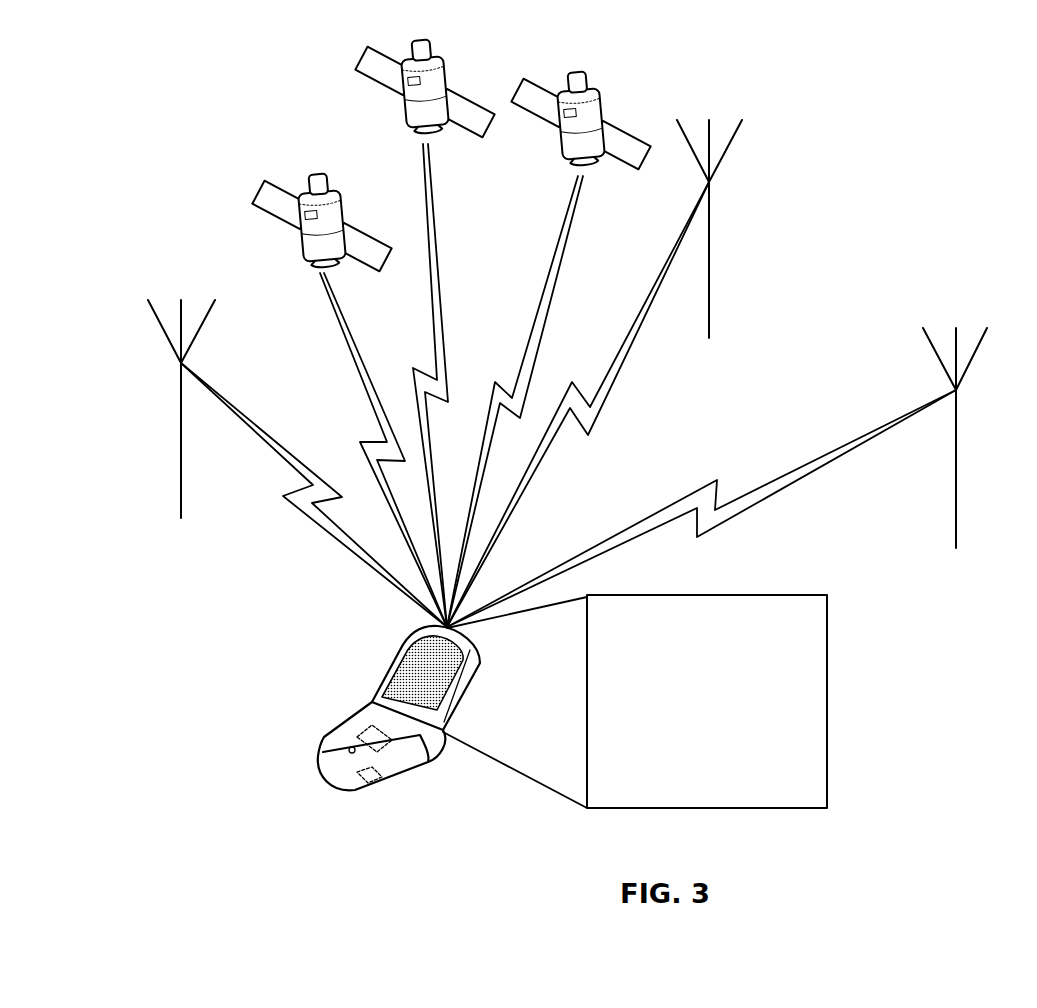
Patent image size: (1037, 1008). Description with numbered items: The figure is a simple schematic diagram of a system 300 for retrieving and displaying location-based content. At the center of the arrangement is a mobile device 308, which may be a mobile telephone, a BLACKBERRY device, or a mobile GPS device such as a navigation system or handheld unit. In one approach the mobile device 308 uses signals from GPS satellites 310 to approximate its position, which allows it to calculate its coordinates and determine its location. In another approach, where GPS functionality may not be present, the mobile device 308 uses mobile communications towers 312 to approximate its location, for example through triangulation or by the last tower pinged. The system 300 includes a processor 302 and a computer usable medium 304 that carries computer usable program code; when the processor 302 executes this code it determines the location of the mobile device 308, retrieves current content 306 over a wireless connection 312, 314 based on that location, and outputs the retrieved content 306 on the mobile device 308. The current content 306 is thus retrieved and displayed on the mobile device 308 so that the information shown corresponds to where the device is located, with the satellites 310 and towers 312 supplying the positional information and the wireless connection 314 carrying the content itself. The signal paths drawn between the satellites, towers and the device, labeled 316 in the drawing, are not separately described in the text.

The system 300 is at (836, 197).
The processor 302 is at (357, 731).
The computer usable medium 304 is at (388, 782).
The content 306 is at (807, 593).
The mobile device 308 is at (400, 645).
The GPS satellites 310 is at (303, 173).
The mobile communications towers 312 is at (182, 470).
The wireless connection 314 is at (233, 408).
The satellite signal 316 is at (352, 342).